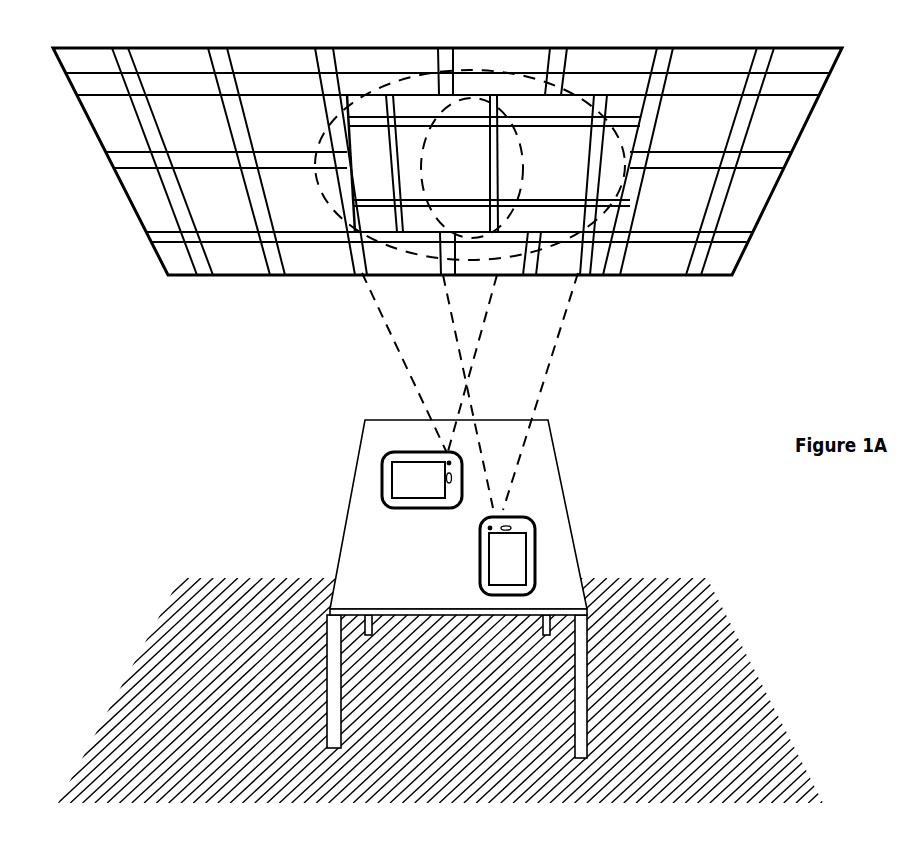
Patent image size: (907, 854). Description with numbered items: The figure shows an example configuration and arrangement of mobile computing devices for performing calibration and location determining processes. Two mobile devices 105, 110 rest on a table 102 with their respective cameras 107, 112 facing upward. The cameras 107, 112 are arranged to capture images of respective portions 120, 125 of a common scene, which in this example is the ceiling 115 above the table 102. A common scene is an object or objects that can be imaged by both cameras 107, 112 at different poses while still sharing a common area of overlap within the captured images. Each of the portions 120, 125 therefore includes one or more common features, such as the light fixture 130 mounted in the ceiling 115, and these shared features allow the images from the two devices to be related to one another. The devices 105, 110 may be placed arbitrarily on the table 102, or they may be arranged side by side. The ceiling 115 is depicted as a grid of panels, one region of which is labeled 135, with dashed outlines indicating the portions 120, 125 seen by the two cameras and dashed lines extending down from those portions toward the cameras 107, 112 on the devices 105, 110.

The table 102 is at (336, 512).
The mobile device 105 is at (542, 553).
The camera 107 is at (509, 506).
The mobile device 110 is at (404, 519).
The camera 112 is at (428, 445).
The ceiling 115 is at (447, 204).
The portion 120 is at (583, 258).
The portion 125 is at (320, 212).
The light fixture 130 is at (407, 185).
The display tiles / pixel grid 135 is at (152, 182).